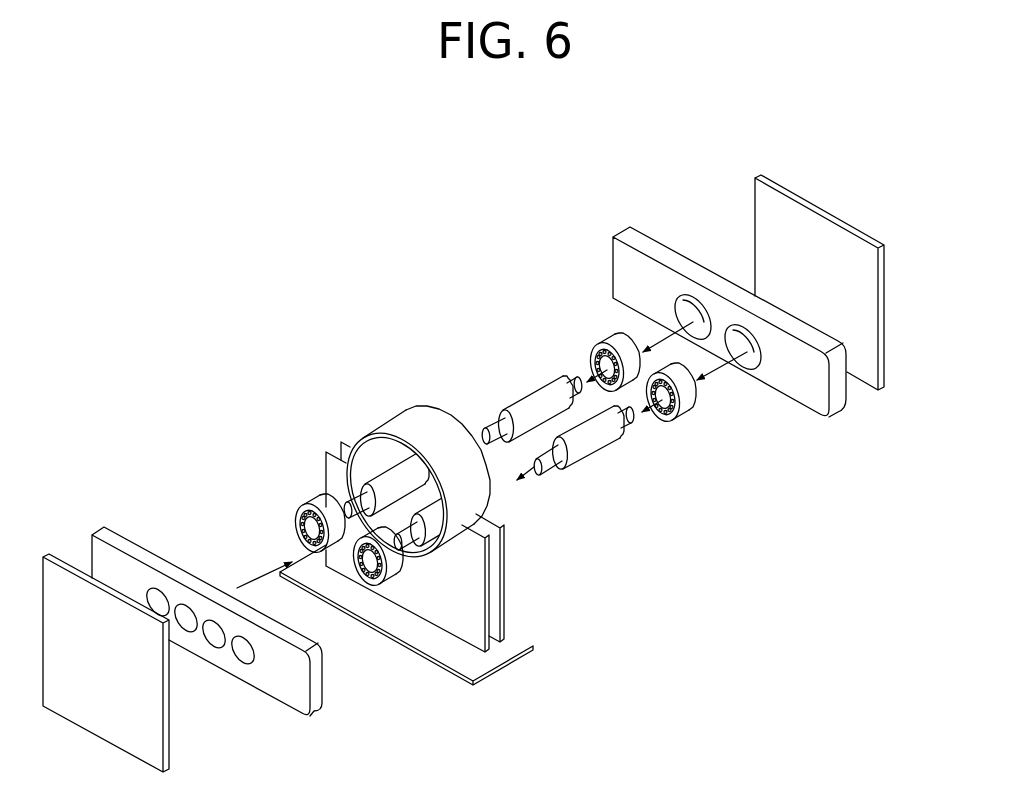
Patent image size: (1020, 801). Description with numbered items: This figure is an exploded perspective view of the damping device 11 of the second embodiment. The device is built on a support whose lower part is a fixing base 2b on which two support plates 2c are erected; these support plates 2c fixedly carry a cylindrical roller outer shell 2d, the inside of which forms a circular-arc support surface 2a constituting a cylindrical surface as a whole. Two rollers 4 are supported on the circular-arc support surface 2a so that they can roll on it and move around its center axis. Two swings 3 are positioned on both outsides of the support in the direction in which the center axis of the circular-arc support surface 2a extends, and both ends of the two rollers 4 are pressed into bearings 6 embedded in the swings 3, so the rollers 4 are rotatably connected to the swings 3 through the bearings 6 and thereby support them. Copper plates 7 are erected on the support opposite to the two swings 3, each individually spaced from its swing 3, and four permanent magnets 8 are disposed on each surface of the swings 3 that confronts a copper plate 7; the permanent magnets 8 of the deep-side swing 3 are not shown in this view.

The circular-arc support surface 2a is at (360, 465).
The fixing base 2b is at (505, 665).
The support plates 2c is at (500, 605).
The cylindrical roller outer shell 2d is at (425, 430).
The swings 3 is at (108, 532).
The rollers 4 is at (528, 400).
The bearings 6 is at (606, 348).
The copper plates 7 is at (118, 707).
The permanent magnets 8 is at (188, 603).
The damping device 11 is at (586, 545).